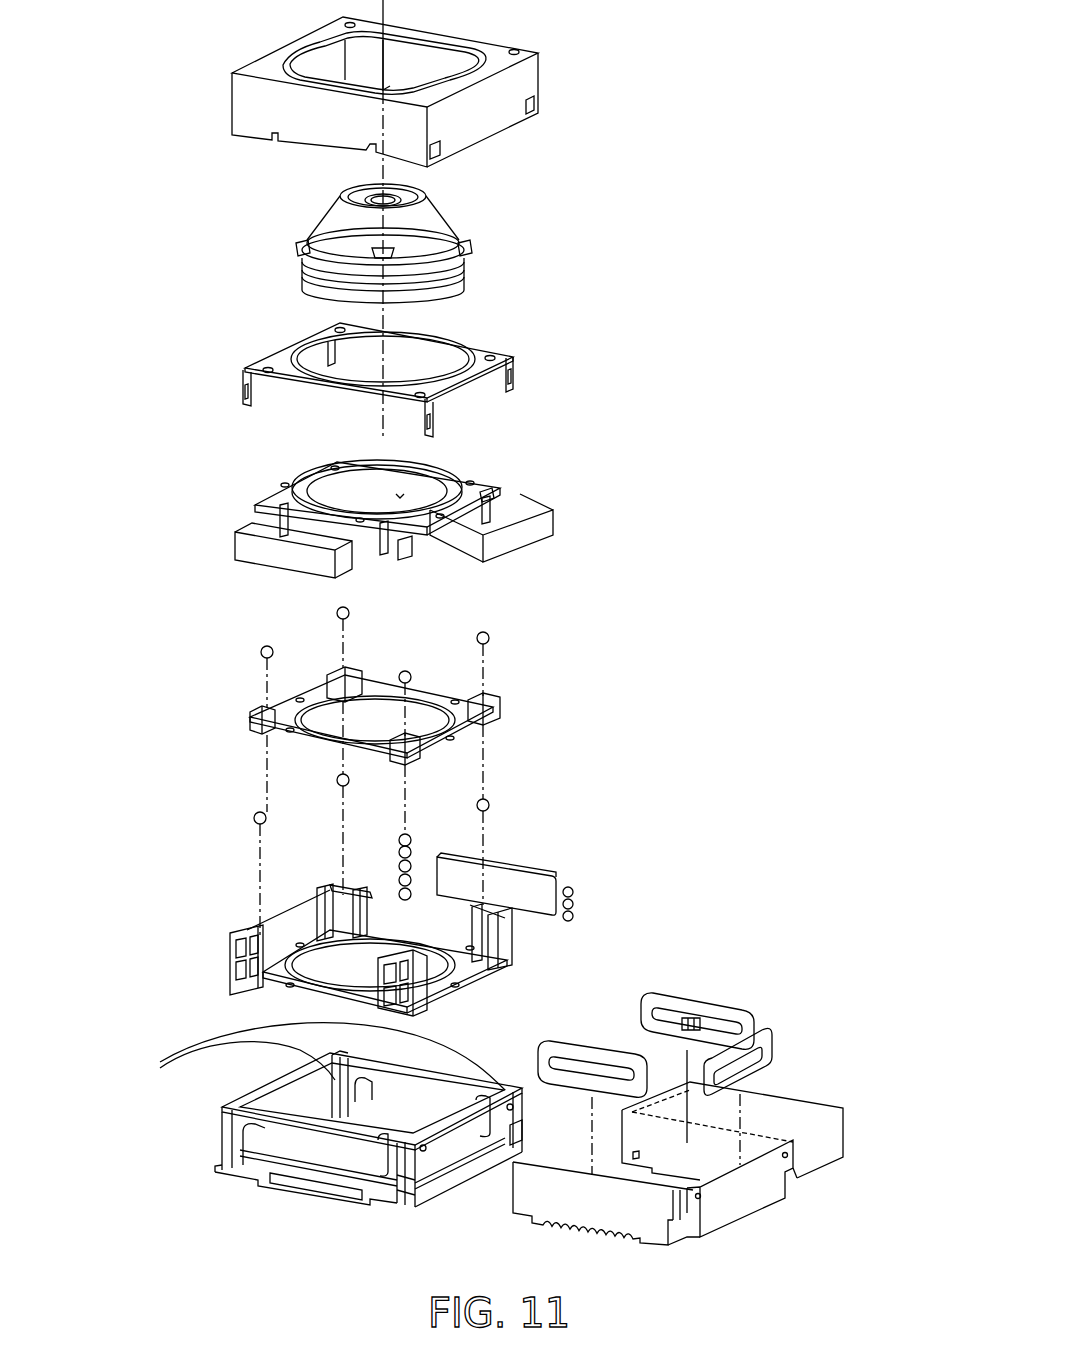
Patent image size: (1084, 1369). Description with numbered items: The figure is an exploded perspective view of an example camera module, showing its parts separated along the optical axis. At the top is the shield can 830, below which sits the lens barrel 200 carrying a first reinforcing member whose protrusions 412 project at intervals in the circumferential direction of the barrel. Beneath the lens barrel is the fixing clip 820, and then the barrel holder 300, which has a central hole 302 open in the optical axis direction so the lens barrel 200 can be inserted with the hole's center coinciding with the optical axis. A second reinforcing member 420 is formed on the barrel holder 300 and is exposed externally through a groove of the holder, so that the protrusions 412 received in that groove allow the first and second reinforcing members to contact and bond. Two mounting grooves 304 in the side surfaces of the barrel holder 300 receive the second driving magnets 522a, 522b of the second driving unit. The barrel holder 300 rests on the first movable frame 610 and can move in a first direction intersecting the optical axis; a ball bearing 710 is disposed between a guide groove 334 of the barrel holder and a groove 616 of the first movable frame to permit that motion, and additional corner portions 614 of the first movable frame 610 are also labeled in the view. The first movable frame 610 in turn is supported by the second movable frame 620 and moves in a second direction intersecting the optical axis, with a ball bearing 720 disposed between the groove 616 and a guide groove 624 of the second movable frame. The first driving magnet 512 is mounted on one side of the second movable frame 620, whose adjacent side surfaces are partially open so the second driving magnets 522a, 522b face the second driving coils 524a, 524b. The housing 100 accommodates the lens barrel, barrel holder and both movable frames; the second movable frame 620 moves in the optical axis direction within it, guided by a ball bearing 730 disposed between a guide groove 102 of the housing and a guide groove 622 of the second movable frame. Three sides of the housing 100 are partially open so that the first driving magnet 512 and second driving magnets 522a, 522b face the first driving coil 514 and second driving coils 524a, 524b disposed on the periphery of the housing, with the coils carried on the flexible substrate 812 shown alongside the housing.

The housing 100 is at (300, 1180).
The guide groove 102 is at (310, 1056).
The lens barrel 200 is at (468, 248).
The barrel holder 300 is at (265, 502).
The hole 302 is at (400, 494).
The mounting grooves 304 is at (290, 528).
The guide groove 334 is at (405, 553).
The protrusion 412 is at (300, 247).
The second reinforcing member 420 is at (492, 491).
The first driving magnet 512 is at (515, 880).
The first driving coil 514 is at (730, 1005).
The second driving magnet 522a is at (258, 553).
The second driving magnet 522b is at (525, 538).
The second driving coil 524a is at (612, 1060).
The second driving coil 524b is at (770, 1040).
The first movable frame 610 is at (275, 740).
The first guide frame protrusion 614 is at (415, 760).
The groove 616 is at (262, 722).
The second movable frame 620 is at (232, 962).
The guide groove 622 is at (350, 892).
The guide groove 624 is at (317, 895).
The ball bearing 710 is at (490, 805).
The ball bearing 720 is at (490, 640).
The ball bearing 730 is at (575, 886).
The flexible substrate 812 is at (755, 1200).
The fixing clip 820 is at (470, 345).
The shield can 830 is at (232, 100).